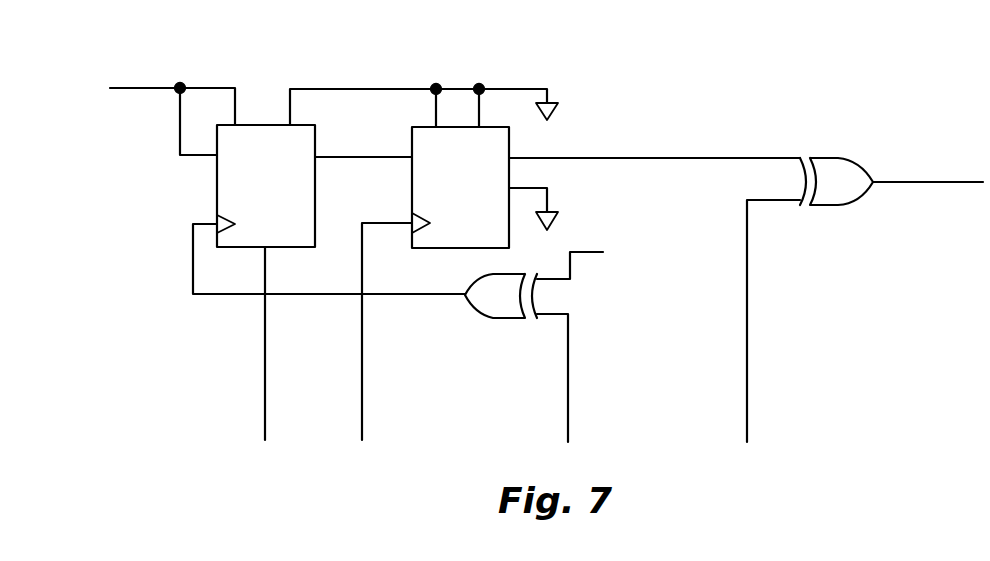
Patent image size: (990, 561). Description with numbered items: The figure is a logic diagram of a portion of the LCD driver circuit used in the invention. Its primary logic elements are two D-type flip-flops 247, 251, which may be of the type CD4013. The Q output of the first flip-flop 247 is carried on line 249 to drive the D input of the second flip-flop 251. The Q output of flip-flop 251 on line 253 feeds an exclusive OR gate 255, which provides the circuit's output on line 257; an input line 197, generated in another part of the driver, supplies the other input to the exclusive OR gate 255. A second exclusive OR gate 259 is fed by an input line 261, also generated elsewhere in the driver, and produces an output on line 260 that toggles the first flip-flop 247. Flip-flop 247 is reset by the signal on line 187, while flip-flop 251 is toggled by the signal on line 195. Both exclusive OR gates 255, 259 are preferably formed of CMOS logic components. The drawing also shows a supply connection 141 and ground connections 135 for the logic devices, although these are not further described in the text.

The 3.5 V supply line 141 is at (197, 88).
The D-type flip-flop 247 is at (253, 137).
The line 249 is at (350, 153).
The D-type flip-flop 251 is at (430, 192).
The line 253 is at (545, 157).
The ground 135 is at (558, 106).
The exclusive OR gate 255 is at (828, 172).
The line 257 is at (898, 180).
The input line 197 is at (745, 385).
The exclusive OR gate 259 is at (487, 312).
The line 260 is at (400, 293).
The input line 261 is at (568, 368).
The line 187 is at (265, 387).
The line 195 is at (362, 393).